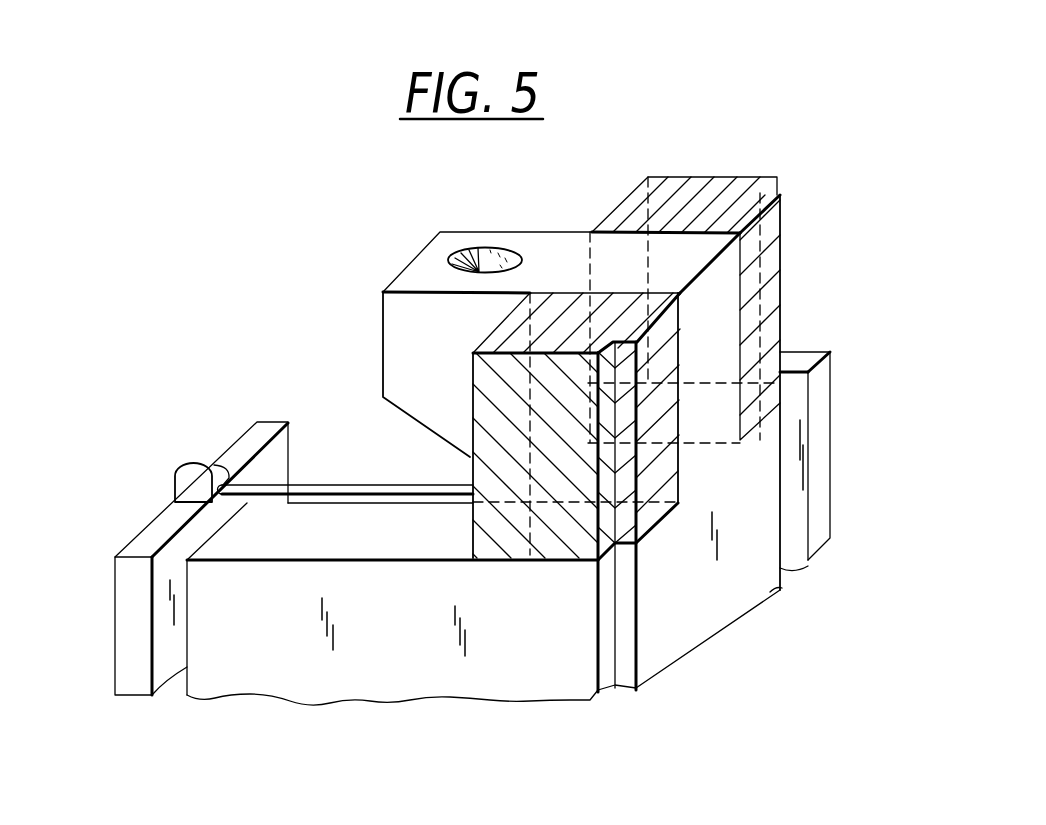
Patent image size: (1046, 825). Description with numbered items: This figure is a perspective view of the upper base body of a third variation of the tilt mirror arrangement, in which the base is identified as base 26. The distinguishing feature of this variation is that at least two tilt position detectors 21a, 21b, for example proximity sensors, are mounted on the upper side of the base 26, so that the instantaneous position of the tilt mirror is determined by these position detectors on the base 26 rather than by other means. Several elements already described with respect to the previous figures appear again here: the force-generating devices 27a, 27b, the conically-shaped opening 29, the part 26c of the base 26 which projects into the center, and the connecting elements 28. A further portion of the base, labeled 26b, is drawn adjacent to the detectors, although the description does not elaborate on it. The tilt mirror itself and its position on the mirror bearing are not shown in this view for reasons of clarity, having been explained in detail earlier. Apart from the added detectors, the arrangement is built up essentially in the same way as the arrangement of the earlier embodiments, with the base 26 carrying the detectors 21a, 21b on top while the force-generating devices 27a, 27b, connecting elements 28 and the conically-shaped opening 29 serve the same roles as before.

The tilt position detector 21a is at (723, 185).
The tilt position detector 21b is at (477, 390).
The base 26 is at (433, 672).
The mold body side portion 26b is at (722, 610).
The part of the base which projects into the center 26c is at (422, 276).
The force-generating device 27a is at (127, 633).
The force-generating device 27b is at (808, 352).
The connecting element 28 is at (330, 490).
The conically-shaped opening 29 is at (496, 257).